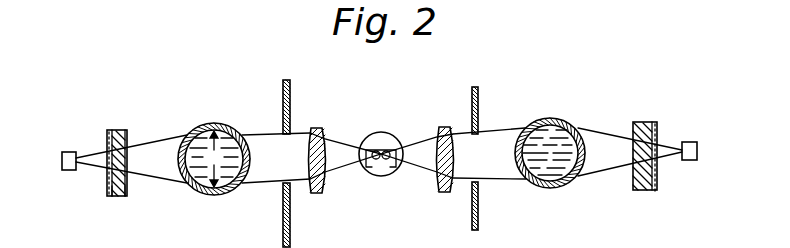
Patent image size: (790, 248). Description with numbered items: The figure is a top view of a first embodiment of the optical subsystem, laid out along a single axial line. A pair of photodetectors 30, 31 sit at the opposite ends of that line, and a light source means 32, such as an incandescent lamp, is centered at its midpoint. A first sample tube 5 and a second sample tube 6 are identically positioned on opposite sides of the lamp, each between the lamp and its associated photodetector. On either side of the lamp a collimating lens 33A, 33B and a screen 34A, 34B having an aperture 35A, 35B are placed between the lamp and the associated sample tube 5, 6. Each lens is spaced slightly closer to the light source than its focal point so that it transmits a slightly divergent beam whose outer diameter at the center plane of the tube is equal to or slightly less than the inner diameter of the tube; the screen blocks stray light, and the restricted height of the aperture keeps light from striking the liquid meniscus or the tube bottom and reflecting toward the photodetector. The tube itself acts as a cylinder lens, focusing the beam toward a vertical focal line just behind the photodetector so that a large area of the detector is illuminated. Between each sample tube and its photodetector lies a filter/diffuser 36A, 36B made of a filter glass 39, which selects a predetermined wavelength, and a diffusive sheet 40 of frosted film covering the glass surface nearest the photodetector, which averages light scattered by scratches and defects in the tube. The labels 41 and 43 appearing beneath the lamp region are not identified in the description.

The photodetector 30 is at (71, 152).
The photodetector 31 is at (689, 142).
The first sample tube 5 is at (212, 123).
The second sample tube 6 is at (553, 118).
The light source means 32 is at (393, 110).
The collimating lens 33A is at (318, 128).
The collimating lens 33B is at (445, 127).
The screen 34A is at (291, 97).
The screen 34B is at (479, 103).
The aperture 35A is at (294, 185).
The aperture 35B is at (480, 183).
The filter/diffuser 36A is at (115, 130).
The filter/diffuser 36B is at (641, 122).
The filter glass 39 is at (122, 197).
The diffusive sheet 40 is at (110, 196).
The first compartment 41 is at (387, 239).
The second compartment 43 is at (419, 239).